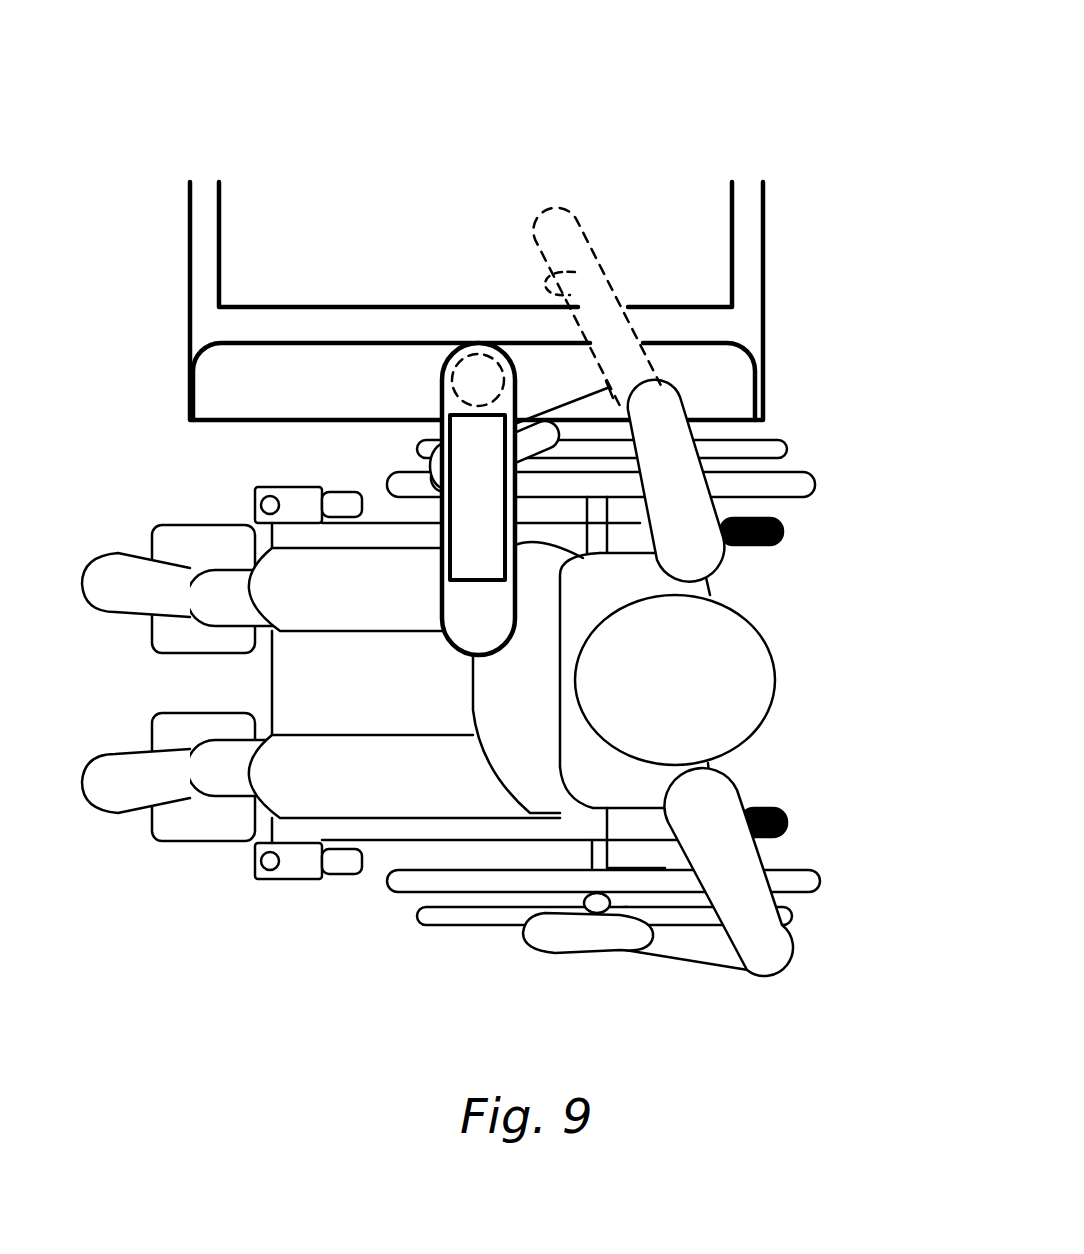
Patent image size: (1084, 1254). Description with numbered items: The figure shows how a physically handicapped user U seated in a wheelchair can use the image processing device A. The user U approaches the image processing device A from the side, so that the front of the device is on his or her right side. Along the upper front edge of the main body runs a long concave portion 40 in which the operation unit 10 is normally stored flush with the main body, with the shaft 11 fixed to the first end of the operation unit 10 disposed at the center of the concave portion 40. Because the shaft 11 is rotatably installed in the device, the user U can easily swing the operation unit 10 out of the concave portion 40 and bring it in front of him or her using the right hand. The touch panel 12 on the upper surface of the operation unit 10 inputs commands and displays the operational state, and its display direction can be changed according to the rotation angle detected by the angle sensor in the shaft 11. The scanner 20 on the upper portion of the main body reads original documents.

The operation unit 10 is at (416, 483).
The shaft 11 is at (440, 353).
The liquid crystal touch panel 12 is at (468, 513).
The scanner 20 is at (481, 207).
The concave portion 40 is at (725, 378).
The image processing device A is at (782, 223).
The user U is at (755, 676).